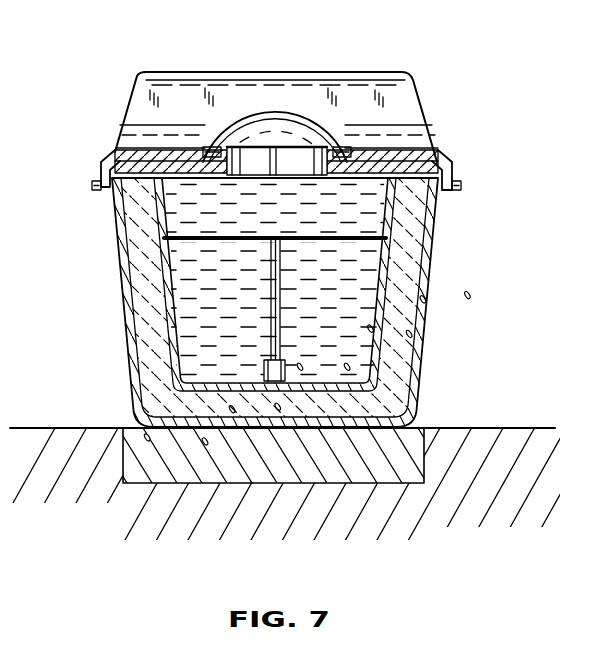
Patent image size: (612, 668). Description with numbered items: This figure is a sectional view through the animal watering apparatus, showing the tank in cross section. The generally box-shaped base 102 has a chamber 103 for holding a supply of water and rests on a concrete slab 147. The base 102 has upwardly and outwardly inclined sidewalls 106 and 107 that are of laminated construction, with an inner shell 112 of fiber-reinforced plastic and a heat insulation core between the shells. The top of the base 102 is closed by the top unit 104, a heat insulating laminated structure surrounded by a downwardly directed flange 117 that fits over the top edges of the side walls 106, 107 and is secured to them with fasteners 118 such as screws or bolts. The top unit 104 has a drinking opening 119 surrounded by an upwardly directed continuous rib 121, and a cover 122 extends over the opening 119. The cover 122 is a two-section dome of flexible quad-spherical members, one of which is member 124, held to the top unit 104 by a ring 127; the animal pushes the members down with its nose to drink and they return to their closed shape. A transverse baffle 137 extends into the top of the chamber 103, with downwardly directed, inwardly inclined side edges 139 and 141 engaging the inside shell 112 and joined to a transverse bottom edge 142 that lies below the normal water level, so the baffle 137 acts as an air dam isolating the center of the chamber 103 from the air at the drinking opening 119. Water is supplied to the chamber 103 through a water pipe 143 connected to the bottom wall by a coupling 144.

The base 102 is at (432, 352).
The chamber 103 is at (275, 362).
The top unit 104 is at (180, 95).
The sidewall 106 is at (122, 290).
The sidewall 107 is at (428, 306).
The inner shell 112 is at (168, 327).
The flange 117 is at (103, 170).
The fasteners 118 is at (93, 188).
The drinking opening 119 is at (283, 165).
The rib 121 is at (215, 152).
The cover 122 is at (279, 97).
The quad-spherical member 124 is at (302, 108).
The ring 127 is at (340, 150).
The baffle 137 is at (250, 232).
The side edge 139 is at (163, 211).
The side edge 141 is at (380, 212).
The bottom edge 142 is at (333, 240).
The water pipe 143 is at (278, 293).
The coupling 144 is at (284, 364).
The concrete slab 147 is at (379, 468).